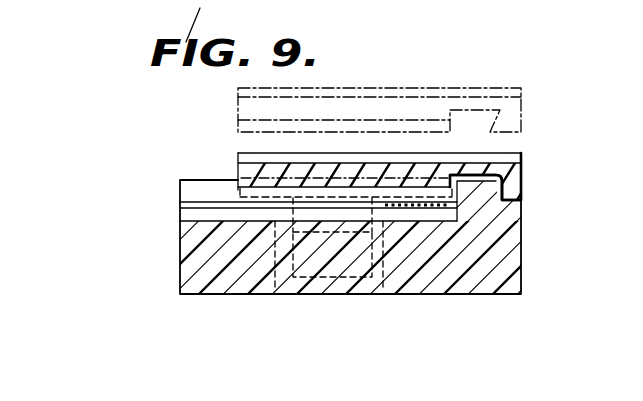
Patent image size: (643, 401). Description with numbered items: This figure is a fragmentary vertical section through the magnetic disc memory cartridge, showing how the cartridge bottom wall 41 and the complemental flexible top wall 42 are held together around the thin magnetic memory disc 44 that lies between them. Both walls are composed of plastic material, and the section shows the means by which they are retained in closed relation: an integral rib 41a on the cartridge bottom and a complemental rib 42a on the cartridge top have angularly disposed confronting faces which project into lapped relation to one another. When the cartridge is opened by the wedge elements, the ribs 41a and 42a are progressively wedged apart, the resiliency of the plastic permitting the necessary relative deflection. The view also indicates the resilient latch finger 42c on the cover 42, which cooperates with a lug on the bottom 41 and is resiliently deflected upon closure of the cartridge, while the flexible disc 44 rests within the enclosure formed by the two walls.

The bottom wall 41 is at (205, 265).
The rib on cartridge bottom 41a is at (492, 182).
The flexible top wall 42 is at (248, 106).
The rib on cartridge top 42a is at (508, 184).
The resilient latch finger 42c is at (380, 258).
The magnetic memory disc 44 is at (203, 203).